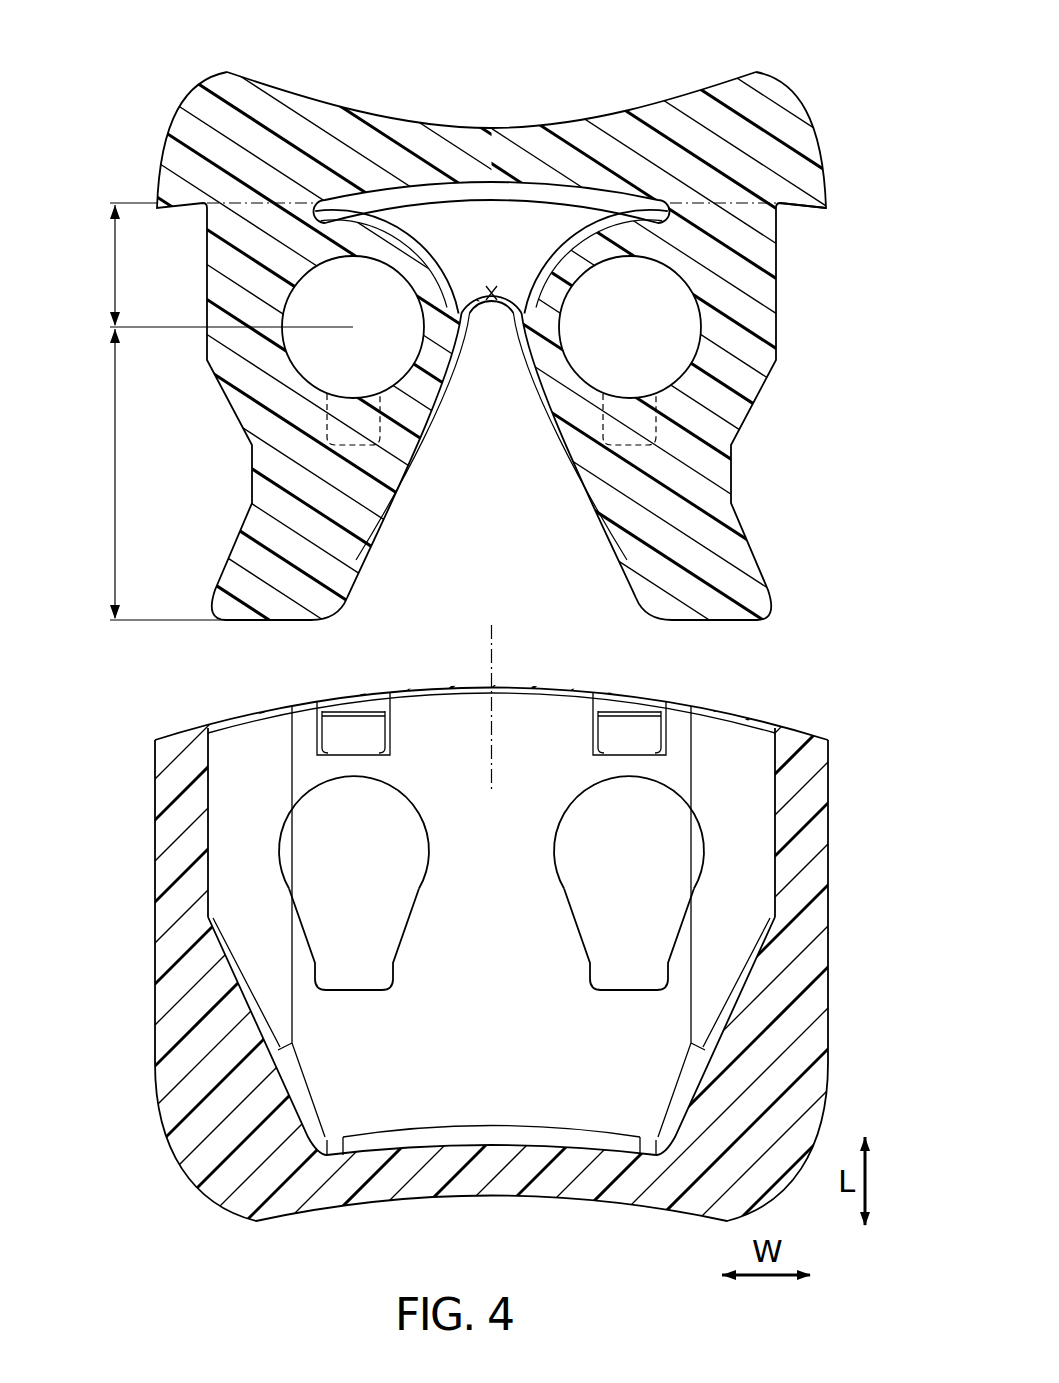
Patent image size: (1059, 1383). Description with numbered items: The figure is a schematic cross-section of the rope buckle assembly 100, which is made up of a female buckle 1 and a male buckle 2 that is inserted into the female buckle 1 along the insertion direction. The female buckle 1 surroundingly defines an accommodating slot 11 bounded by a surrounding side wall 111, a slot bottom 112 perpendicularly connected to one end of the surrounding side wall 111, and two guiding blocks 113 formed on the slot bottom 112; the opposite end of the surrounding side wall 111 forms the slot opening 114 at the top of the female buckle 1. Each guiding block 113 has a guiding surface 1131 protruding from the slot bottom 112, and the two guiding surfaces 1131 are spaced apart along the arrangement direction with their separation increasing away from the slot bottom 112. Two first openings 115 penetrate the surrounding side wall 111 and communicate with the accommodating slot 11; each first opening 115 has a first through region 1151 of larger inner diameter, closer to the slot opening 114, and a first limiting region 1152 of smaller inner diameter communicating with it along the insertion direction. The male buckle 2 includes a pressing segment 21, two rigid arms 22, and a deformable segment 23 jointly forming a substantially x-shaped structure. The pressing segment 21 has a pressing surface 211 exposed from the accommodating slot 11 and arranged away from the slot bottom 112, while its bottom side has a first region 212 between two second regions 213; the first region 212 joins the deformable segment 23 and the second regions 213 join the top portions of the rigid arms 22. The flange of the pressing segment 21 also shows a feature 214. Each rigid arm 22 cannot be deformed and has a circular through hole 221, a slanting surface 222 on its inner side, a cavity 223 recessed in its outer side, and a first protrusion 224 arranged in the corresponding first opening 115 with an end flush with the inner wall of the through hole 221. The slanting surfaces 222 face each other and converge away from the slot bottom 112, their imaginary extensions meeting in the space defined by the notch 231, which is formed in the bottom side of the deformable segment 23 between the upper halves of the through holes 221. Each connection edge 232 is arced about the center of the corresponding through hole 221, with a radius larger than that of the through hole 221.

The rope buckle assembly 100 is at (790, 42).
The female buckle 1 is at (152, 750).
The accommodating slot 11 is at (616, 1054).
The surrounding side wall 111 is at (832, 905).
The slot bottom 112 is at (415, 1203).
The guiding block 113 is at (259, 1022).
The guiding surface 1131 is at (294, 1077).
The slot opening 114 is at (763, 727).
The first opening 115 is at (700, 841).
The first through region 1151 is at (281, 860).
The first limiting region 1152 is at (317, 968).
The male buckle 2 is at (153, 111).
The pressing segment 21 is at (818, 140).
The pressing surface 211 is at (308, 95).
The first region 212 is at (566, 190).
The second region 213 is at (704, 198).
The flange bottom surface 214 is at (806, 214).
The rigid arm 22 is at (252, 457).
The through hole 221 is at (700, 346).
The slanting surface 222 is at (603, 524).
The cavity 223 is at (736, 478).
The first protrusion 224 is at (658, 432).
The deformable segment 23 is at (457, 216).
The notch 231 is at (504, 296).
The connection edge 232 is at (589, 226).